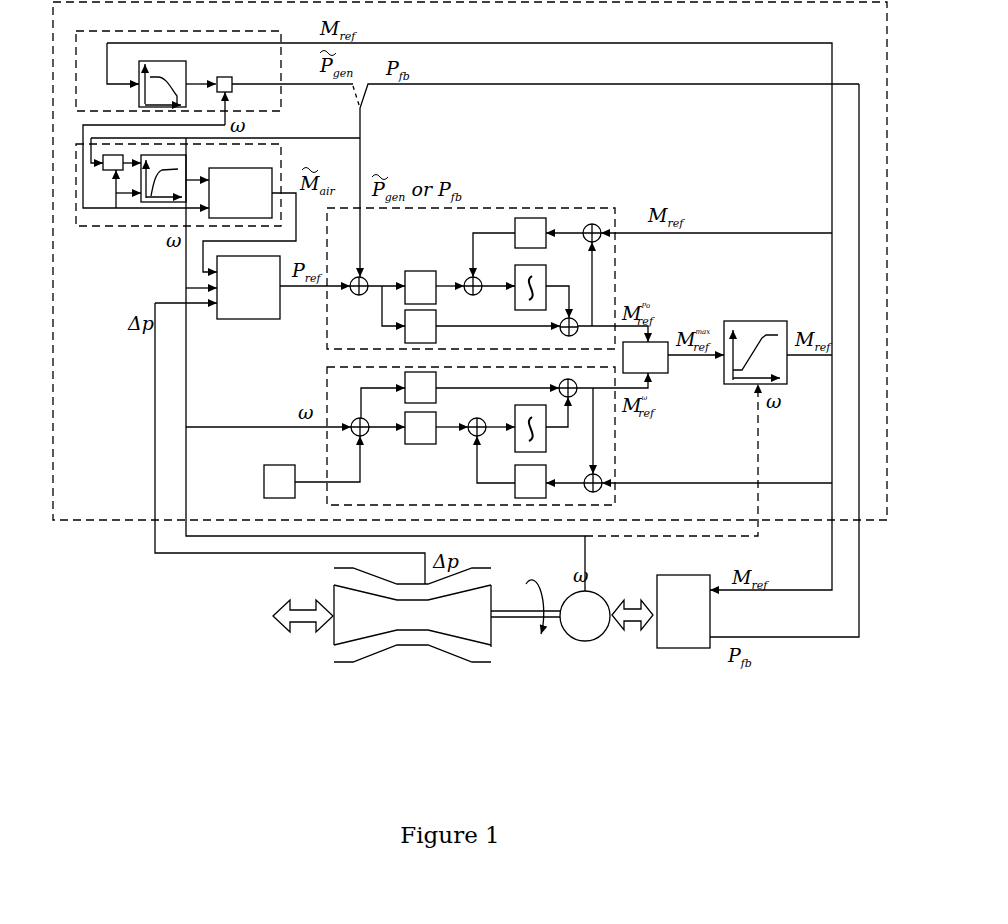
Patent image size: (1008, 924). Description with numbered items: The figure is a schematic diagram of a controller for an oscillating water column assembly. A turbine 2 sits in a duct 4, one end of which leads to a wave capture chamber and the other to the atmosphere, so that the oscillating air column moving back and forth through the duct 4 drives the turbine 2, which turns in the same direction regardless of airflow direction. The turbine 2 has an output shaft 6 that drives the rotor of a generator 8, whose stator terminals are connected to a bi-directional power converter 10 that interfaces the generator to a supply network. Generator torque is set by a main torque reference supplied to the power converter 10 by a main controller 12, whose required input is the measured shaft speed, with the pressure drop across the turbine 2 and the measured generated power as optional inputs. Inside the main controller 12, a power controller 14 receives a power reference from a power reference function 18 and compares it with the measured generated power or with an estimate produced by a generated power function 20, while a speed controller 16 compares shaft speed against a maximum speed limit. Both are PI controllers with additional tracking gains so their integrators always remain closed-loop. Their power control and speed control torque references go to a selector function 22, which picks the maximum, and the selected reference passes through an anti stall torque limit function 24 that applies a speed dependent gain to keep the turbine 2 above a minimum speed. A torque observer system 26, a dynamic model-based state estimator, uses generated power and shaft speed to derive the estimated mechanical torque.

The turbine 2 is at (347, 630).
The duct 4 is at (377, 645).
The output shaft 6 is at (505, 609).
The generator 8 is at (595, 638).
The power converter 10 is at (680, 648).
The main controller 12 is at (110, 520).
The power controller 14 is at (565, 208).
The speed controller 16 is at (327, 387).
The power reference function 18 is at (242, 320).
The generated power function 20 is at (281, 93).
The selector function 22 is at (668, 375).
The anti stall torque limit function 24 is at (736, 319).
The torque observer system 26 is at (115, 227).